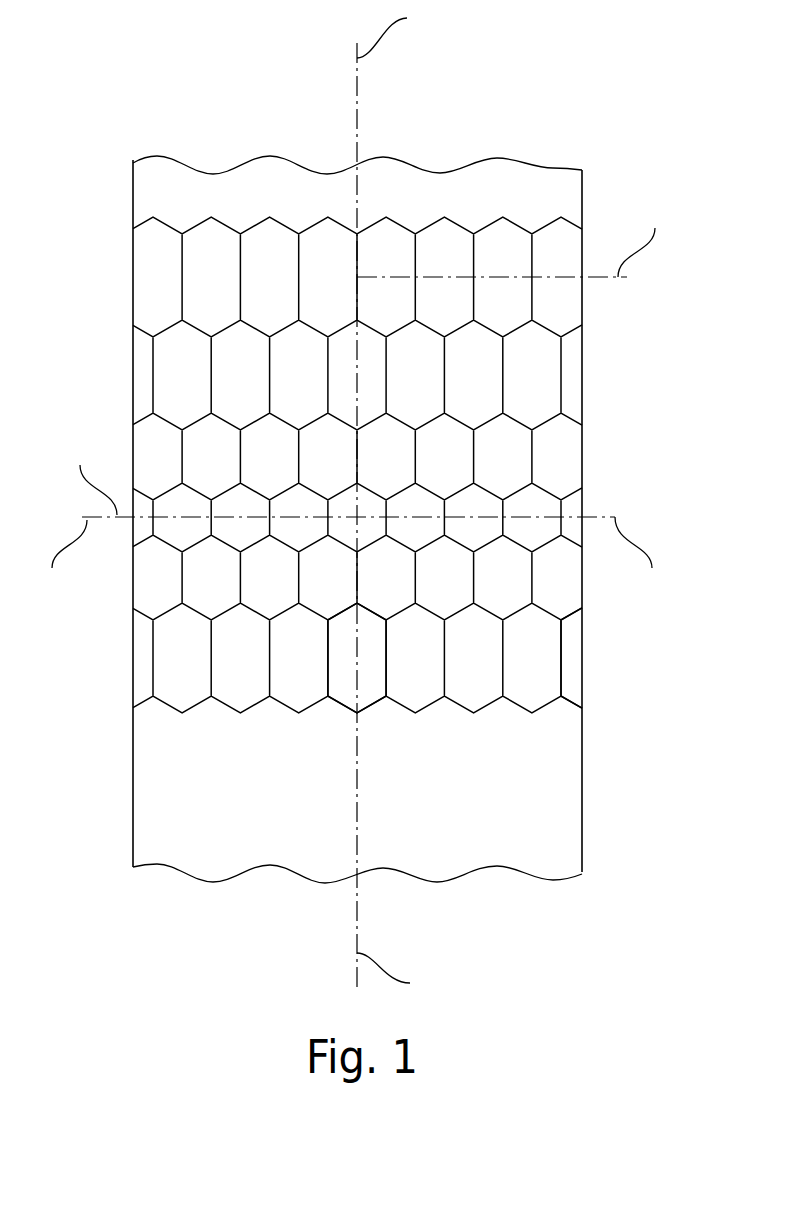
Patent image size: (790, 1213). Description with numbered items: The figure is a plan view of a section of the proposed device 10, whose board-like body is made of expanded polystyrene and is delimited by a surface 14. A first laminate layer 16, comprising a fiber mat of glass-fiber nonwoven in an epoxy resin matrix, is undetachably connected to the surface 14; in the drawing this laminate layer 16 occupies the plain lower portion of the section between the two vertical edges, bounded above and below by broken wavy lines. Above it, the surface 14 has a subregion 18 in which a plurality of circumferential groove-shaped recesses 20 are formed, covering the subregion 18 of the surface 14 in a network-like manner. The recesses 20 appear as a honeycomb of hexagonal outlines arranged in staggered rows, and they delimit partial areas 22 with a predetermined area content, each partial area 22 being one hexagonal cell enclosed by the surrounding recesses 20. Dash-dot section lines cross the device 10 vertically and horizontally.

The structural component 10 is at (625, 138).
The panel 14 is at (572, 805).
The flat region 16 is at (449, 802).
The honeycomb structure 18 is at (618, 376).
The honeycomb cell wall 20 is at (572, 653).
The honeycomb cell 22 is at (343, 685).